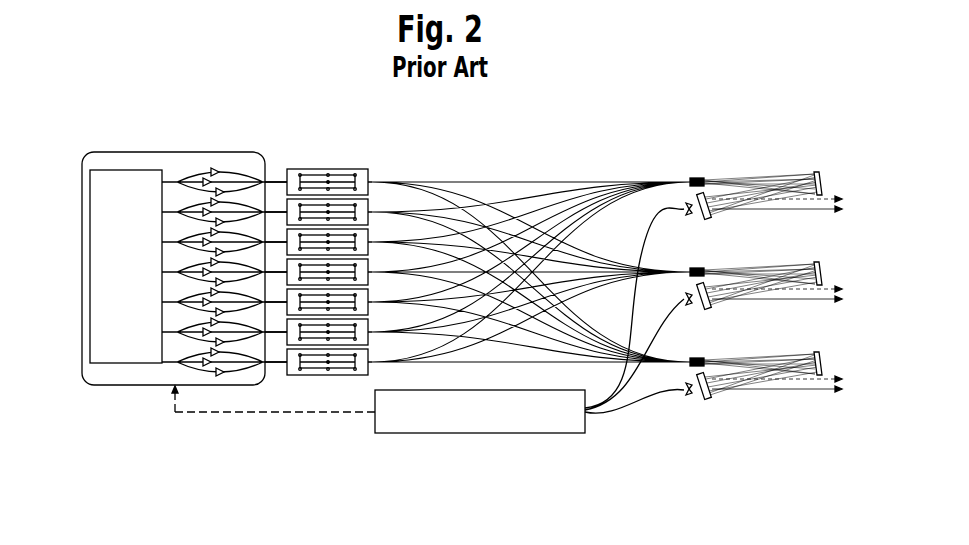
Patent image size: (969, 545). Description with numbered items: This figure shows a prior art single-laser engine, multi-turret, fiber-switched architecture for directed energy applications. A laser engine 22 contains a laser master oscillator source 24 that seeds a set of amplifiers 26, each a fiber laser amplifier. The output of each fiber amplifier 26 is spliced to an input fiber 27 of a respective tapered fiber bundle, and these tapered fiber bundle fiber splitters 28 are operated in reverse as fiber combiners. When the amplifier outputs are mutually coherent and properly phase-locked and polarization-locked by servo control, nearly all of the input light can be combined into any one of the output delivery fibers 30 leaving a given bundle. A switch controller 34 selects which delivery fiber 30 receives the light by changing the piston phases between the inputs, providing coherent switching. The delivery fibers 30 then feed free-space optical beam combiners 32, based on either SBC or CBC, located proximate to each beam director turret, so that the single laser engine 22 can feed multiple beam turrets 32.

The laser engine 22 is at (86, 151).
The laser master oscillator source 24 is at (90, 268).
The amplifiers 26 is at (263, 145).
The input fiber 27 is at (287, 154).
The tapered fiber bundle fiber splitters 28 is at (370, 165).
The delivery fibers 30 is at (658, 175).
The free-space optical beam combiners 32 is at (828, 173).
The switch controller 34 is at (567, 434).